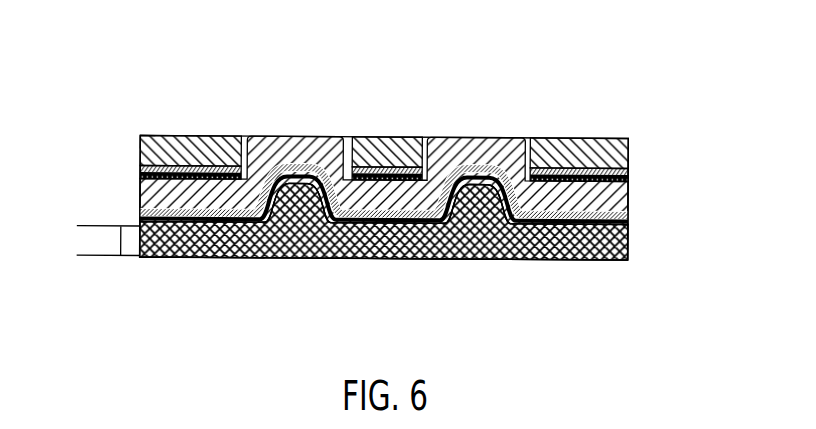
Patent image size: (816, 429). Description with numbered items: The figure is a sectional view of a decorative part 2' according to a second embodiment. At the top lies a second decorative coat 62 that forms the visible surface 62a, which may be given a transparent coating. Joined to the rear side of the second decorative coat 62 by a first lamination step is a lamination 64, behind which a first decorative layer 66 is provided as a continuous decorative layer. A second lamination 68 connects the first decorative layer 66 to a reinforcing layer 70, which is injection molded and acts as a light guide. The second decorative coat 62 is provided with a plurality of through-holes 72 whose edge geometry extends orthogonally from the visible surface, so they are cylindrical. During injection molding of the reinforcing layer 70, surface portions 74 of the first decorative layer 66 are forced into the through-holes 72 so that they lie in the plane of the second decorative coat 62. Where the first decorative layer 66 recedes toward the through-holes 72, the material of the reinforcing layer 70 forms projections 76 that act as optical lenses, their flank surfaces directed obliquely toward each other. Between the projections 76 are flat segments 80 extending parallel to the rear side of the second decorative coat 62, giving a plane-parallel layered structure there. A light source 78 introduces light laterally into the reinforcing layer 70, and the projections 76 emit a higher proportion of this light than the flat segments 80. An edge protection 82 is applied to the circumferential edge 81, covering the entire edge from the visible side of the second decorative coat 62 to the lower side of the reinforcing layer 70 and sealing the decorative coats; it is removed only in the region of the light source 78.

The decorative part 2' is at (384, 143).
The second decorative coat 62 is at (615, 157).
The visible surface 62a is at (378, 136).
The lamination 64 is at (634, 175).
The first decorative layer 66 is at (284, 138).
The second lamination 68 is at (634, 222).
The reinforcing layer 70 is at (622, 250).
The through-holes 72 is at (242, 132).
The surface portions 74 is at (321, 129).
The projections 76 is at (298, 203).
The light source 78 is at (100, 226).
The flat segments 80 is at (197, 258).
The circumferential edge 81 is at (139, 135).
The edge protection 82 is at (140, 150).